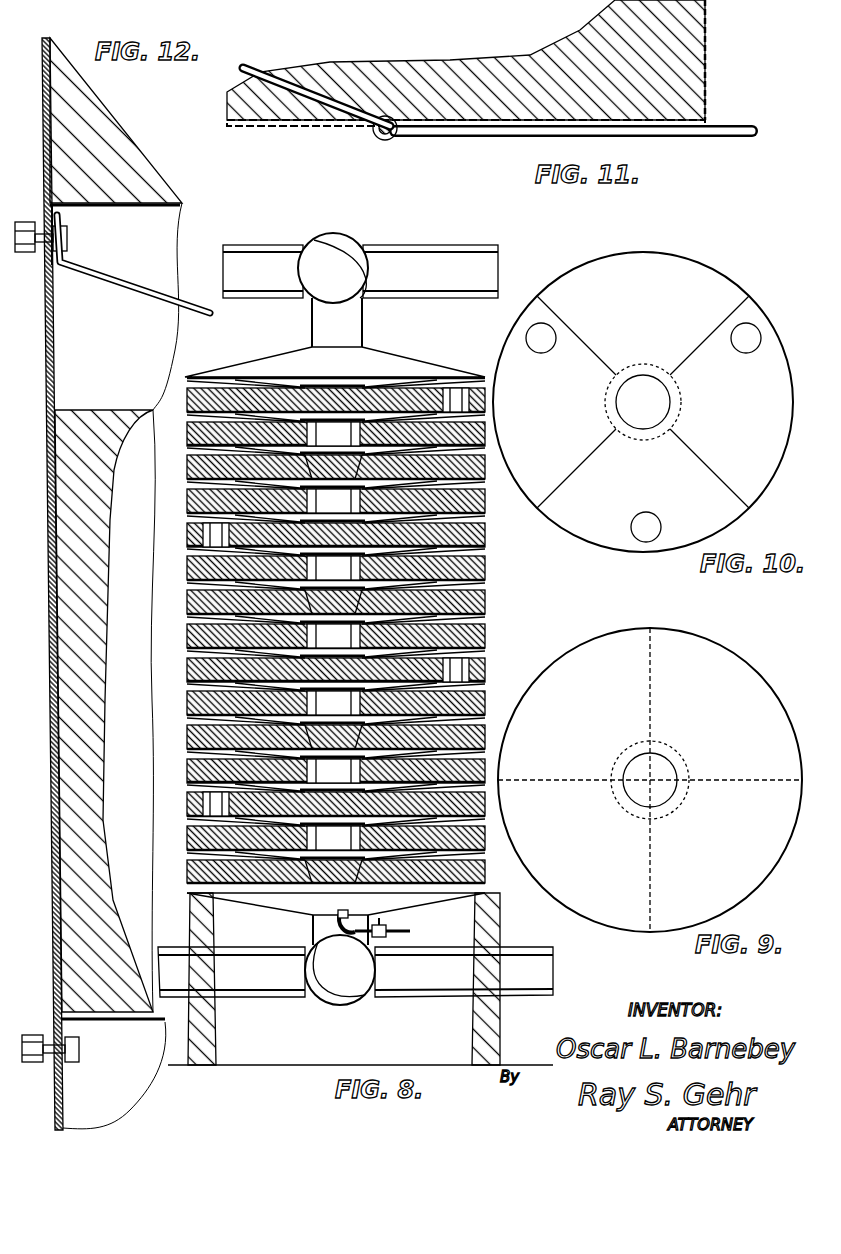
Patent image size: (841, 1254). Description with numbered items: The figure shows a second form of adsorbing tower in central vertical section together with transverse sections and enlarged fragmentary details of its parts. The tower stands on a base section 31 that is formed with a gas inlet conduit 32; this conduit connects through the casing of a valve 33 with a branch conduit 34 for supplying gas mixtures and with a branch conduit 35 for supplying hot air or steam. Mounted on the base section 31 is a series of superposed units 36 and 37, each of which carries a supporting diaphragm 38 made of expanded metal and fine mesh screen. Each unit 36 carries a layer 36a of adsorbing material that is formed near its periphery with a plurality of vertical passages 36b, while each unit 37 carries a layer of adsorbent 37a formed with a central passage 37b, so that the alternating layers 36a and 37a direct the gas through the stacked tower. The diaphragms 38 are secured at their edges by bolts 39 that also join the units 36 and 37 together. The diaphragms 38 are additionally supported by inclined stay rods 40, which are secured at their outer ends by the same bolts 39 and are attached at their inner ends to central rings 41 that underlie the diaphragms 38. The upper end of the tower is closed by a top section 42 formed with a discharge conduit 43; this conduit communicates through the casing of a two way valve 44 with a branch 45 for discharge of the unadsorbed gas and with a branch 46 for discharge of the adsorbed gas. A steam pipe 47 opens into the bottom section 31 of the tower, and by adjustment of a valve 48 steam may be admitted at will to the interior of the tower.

In FIG. 8, the base section 31 is at (262, 903).
In FIG. 8, the gas inlet conduit 32 is at (311, 927).
In FIG. 8, the valve 33 is at (330, 1000).
In FIG. 8, the branch conduit 34 is at (443, 998).
In FIG. 8, the branch conduit 35 is at (245, 1000).
In FIG. 12, the unit 36 is at (44, 110).
In FIG. 10, the unit 36 is at (722, 268).
In FIG. 8, the unit 36 is at (187, 468).
In FIG. 12, the layer of adsorbing material 36a is at (116, 120).
In FIG. 10, the layer of adsorbing material 36a is at (607, 272).
In FIG. 8, the layer of adsorbing material 36a is at (187, 400).
In FIG. 10, the vertical passages 36b is at (750, 326).
In FIG. 8, the vertical passages 36b is at (187, 533).
In FIG. 12, the unit 37 is at (50, 746).
In FIG. 11, the unit 37 is at (466, 60).
In FIG. 9, the unit 37 is at (740, 658).
In FIG. 8, the unit 37 is at (187, 437).
In FIG. 11, the layer of adsorbent 37a is at (644, 49).
In FIG. 9, the layer of adsorbent 37a is at (718, 890).
In FIG. 8, the layer of adsorbent 37a is at (187, 548).
In FIG. 11, the central passage 37b is at (732, 60).
In FIG. 9, the central passage 37b is at (668, 768).
In FIG. 8, the central passage 37b is at (187, 500).
In FIG. 12, the supporting diaphragm 38 is at (150, 205).
In FIG. 11, the supporting diaphragm 38 is at (296, 127).
In FIG. 8, the supporting diaphragm 38 is at (487, 520).
In FIG. 12, the bolts 39 is at (68, 238).
In FIG. 12, the inclined stay rods 40 is at (158, 300).
In FIG. 11, the inclined stay rods 40 is at (377, 115).
In FIG. 10, the inclined stay rods 40 is at (558, 290).
In FIG. 9, the inclined stay rods 40 is at (638, 630).
In FIG. 8, the inclined stay rods 40 is at (487, 569).
In FIG. 11, the central rings 41 is at (455, 135).
In FIG. 10, the central rings 41 is at (605, 403).
In FIG. 9, the central rings 41 is at (634, 742).
In FIG. 8, the top section 42 is at (405, 365).
In FIG. 8, the discharge conduit 43 is at (363, 326).
In FIG. 8, the two way valve 44 is at (342, 242).
In FIG. 8, the branch 45 is at (243, 250).
In FIG. 8, the branch 46 is at (436, 250).
In FIG. 8, the steam pipe 47 is at (362, 928).
In FIG. 8, the valve 48 is at (395, 936).